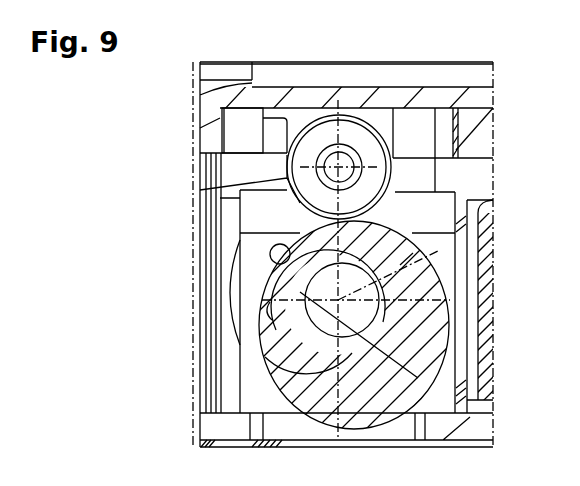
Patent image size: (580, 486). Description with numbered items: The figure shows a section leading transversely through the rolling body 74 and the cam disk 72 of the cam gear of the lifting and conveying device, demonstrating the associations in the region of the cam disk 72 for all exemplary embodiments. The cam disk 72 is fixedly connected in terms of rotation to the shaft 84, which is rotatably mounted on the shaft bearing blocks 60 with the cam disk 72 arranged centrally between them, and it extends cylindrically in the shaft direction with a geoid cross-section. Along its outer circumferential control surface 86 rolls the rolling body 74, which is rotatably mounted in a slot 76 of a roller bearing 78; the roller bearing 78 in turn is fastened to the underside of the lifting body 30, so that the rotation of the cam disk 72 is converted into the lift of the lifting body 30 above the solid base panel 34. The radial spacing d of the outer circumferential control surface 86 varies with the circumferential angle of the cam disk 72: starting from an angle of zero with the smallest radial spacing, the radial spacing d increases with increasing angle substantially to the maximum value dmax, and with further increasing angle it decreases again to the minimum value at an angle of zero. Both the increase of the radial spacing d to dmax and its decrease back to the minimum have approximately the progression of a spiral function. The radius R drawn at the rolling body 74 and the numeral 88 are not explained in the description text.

The lifting body 30 is at (440, 102).
The base panel 34 is at (465, 430).
The shaft bearing blocks 60 is at (433, 218).
The cam disk 72 is at (420, 298).
The rolling body 74 is at (380, 177).
The slot 76 is at (290, 116).
The roller bearing 78 is at (437, 131).
The shaft 84 is at (365, 318).
The outer circumferential control surface 86 is at (438, 268).
The sleeve 88 is at (280, 312).
The radius R is at (336, 168).
The radial spacing d is at (430, 365).
The maximum value of radial spacing dmax is at (280, 383).